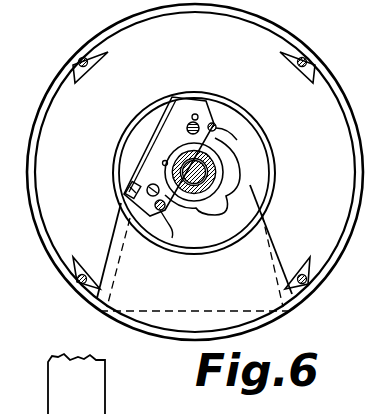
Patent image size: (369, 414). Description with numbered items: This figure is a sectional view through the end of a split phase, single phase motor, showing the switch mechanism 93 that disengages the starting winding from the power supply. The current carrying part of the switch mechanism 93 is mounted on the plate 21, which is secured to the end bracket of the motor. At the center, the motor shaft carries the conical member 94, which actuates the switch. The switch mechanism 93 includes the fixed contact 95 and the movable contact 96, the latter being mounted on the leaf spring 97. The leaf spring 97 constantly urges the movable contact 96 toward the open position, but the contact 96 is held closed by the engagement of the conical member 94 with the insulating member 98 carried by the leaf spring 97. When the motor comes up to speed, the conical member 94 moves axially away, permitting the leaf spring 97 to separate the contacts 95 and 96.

The plate 21 is at (220, 131).
The switch mechanism 93 is at (186, 128).
The conical member 94 is at (210, 168).
The fixed contact 95 is at (128, 184).
The movable contact 96 is at (156, 228).
The leaf spring 97 is at (182, 125).
The insulating member 98 is at (163, 163).